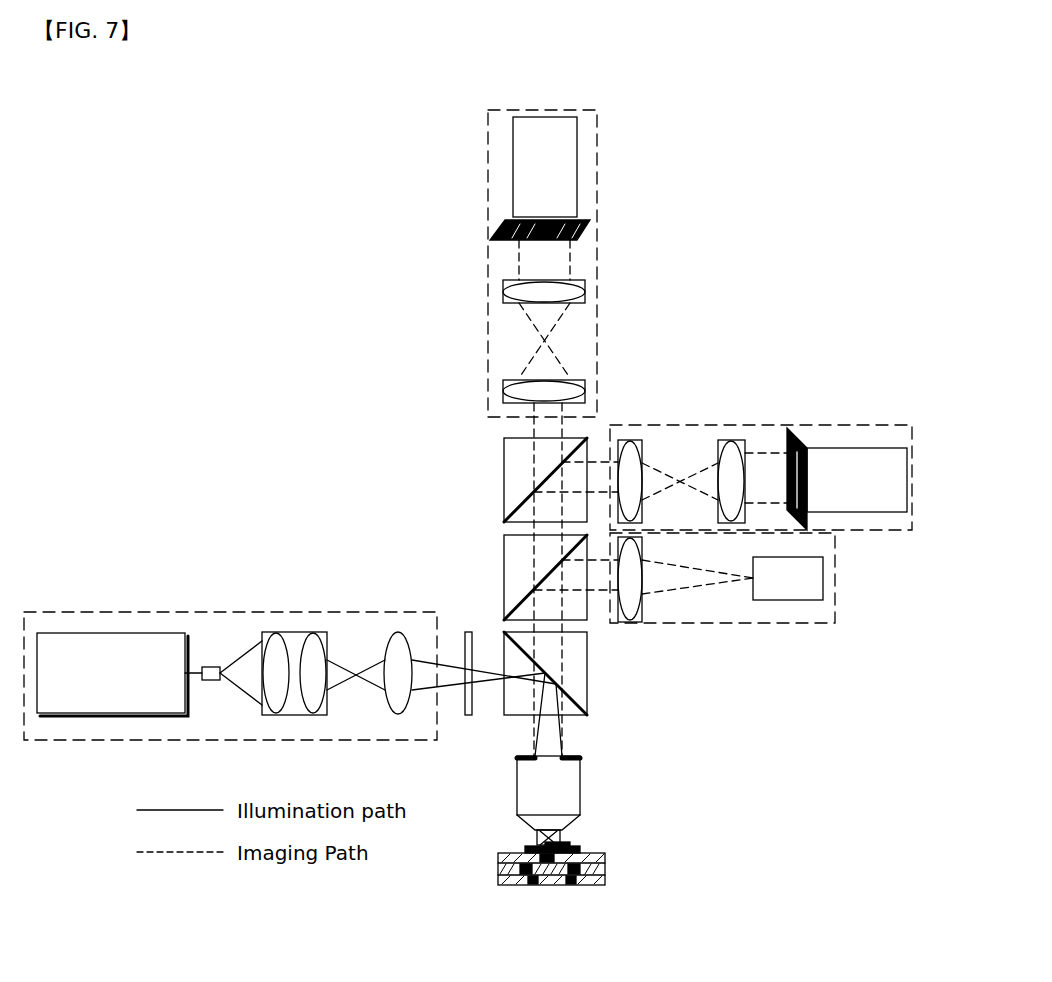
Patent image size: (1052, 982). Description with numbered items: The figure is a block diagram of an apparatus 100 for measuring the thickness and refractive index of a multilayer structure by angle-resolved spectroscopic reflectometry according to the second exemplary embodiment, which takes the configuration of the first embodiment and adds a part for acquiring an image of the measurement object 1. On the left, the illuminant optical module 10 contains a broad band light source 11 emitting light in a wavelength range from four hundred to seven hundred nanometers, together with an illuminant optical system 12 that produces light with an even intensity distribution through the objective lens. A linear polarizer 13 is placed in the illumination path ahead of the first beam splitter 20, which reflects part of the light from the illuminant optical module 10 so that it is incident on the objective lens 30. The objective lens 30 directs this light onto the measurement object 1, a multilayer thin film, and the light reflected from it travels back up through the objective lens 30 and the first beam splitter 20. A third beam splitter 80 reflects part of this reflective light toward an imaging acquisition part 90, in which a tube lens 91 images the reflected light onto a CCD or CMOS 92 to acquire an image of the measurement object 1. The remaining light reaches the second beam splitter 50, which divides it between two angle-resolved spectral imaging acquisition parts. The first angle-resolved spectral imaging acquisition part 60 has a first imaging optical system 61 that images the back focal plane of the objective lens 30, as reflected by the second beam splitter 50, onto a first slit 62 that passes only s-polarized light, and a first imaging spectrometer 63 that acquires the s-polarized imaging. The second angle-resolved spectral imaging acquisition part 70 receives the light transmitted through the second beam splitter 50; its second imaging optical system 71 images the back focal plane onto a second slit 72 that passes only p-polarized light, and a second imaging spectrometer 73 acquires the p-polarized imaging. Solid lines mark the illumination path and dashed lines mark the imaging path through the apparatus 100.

The apparatus for measuring thickness and refractive index of a multilayer structure 100 is at (358, 193).
The illuminant optical module 10 is at (107, 612).
The broad band light source 11 is at (113, 713).
The illuminant optical system 12 is at (293, 722).
The linear polarizer 13 is at (468, 716).
The first beam splitter 20 is at (587, 673).
The objective lens 30 is at (580, 800).
The measurement object 1 is at (620, 870).
The second beam splitter 50 is at (504, 477).
The third beam splitter 80 is at (504, 557).
The first angle-resolved spectral imaging acquisition part 60 is at (729, 425).
The first imaging optical system 61 is at (676, 452).
The first slit 62 is at (787, 440).
The first imaging spectrometer 63 is at (848, 448).
The second angle-resolved spectral imaging acquisition part 70 is at (488, 288).
The second imaging optical system 71 is at (508, 340).
The second slit 72 is at (495, 232).
The second imaging spectrometer 73 is at (513, 160).
The imaging acquisition part 90 is at (762, 623).
The tube lens 91 is at (637, 603).
The CCD or CMOS 92 is at (823, 578).